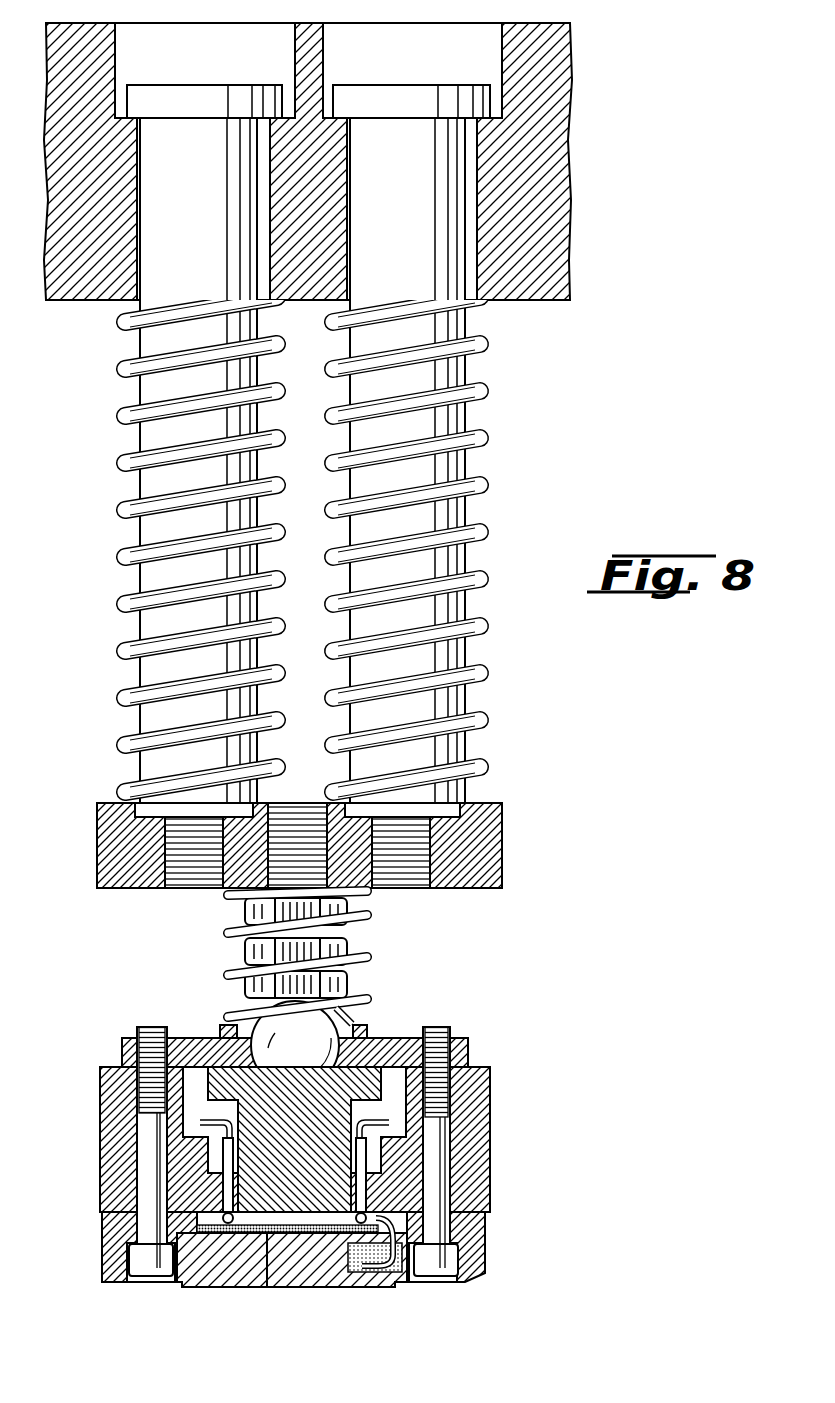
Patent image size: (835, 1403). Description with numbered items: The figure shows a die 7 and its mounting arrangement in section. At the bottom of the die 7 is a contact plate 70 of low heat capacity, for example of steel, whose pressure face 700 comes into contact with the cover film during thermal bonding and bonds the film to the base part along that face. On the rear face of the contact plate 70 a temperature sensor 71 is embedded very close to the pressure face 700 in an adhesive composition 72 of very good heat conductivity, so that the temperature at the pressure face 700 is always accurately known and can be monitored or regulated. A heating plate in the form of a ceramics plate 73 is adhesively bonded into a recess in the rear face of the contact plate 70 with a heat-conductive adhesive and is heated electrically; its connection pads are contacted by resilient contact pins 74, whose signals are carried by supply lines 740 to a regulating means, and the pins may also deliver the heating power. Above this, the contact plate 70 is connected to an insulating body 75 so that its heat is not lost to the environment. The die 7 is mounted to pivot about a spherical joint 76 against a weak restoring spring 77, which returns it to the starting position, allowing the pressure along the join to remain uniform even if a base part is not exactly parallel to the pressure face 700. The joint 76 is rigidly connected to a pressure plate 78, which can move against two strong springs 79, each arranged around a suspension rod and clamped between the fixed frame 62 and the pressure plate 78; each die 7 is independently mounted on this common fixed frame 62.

The fixed frame 62 is at (572, 243).
The die 7 is at (596, 458).
The springs 79 is at (100, 741).
The pressure plate 78 is at (502, 848).
The restoring spring 77 is at (365, 957).
The spherical joint 76 is at (262, 1032).
The insulating body 75 is at (261, 1081).
The supply lines 740 is at (425, 1120).
The resilient contact pins 74 is at (222, 1163).
The contact plate 70 is at (100, 1258).
The pressure face 700 is at (187, 1288).
The ceramics plate 73 is at (267, 1250).
The temperature sensor 71 is at (372, 1268).
The adhesive composition 72 is at (412, 1272).